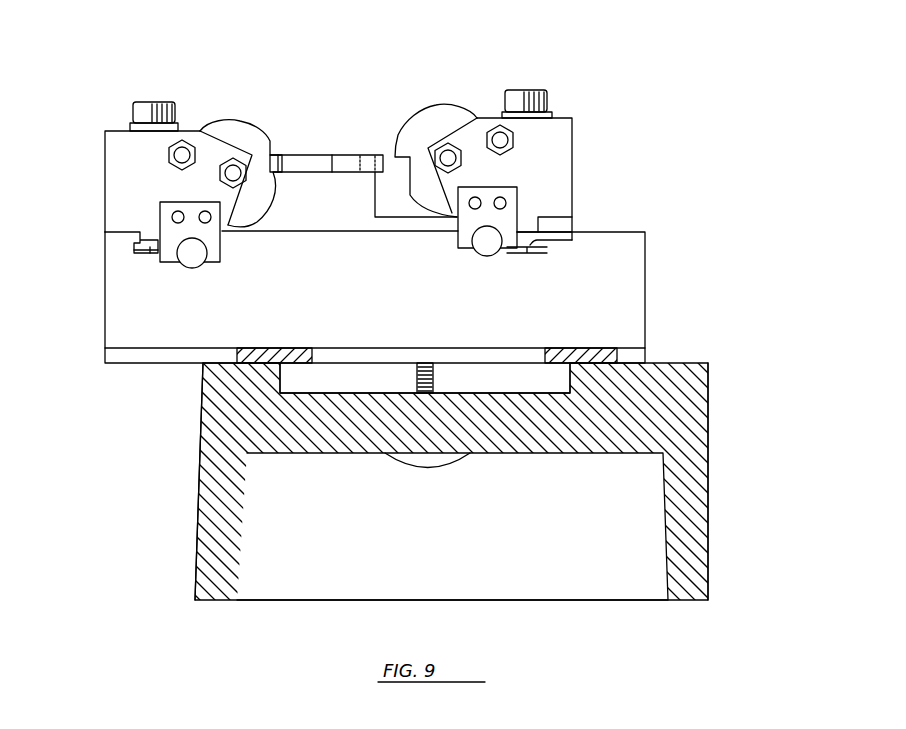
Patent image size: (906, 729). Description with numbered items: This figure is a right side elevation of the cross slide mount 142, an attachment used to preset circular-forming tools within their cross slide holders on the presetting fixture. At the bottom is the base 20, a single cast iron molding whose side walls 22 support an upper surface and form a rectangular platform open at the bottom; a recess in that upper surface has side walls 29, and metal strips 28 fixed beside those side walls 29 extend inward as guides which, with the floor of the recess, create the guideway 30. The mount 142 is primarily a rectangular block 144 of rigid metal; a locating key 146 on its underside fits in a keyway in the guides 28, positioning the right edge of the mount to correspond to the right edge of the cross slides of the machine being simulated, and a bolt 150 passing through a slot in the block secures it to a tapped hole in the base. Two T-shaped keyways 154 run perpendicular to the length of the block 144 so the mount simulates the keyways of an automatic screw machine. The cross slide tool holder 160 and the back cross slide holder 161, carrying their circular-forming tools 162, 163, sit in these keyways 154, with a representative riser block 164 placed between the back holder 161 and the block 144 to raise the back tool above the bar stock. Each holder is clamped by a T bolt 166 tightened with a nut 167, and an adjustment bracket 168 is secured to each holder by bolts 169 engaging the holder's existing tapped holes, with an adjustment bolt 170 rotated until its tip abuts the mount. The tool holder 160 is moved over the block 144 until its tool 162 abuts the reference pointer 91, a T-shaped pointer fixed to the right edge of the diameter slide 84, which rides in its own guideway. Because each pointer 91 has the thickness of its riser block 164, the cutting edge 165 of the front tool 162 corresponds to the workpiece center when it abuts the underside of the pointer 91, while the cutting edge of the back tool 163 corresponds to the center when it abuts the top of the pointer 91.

The base 20 is at (172, 559).
The side walls 22 is at (200, 504).
The metal strips 28 is at (201, 363).
The side walls of recess 29 is at (283, 384).
The guideway 30 is at (372, 393).
The diameter slide 84 is at (310, 214).
The reference pointer 91 is at (350, 164).
The cross slide mount 142 is at (680, 230).
The rectangular block 144 is at (620, 312).
The locating key 146 is at (110, 358).
The bolt 150 is at (435, 381).
The T-shaped keyways 154 is at (128, 232).
The cross slide tool holder 160 is at (120, 148).
The back cross slide holder 161 is at (565, 124).
The circular-forming tool 162 is at (262, 130).
The back circular-forming tool 163 is at (432, 118).
The riser block 164 is at (558, 217).
The cutting edge 165 is at (278, 156).
The T bolt 166 is at (397, 157).
The nut 167 is at (157, 102).
The adjustment bracket 168 is at (213, 256).
The bolts 169 is at (203, 208).
The adjustment bolt 170 is at (193, 264).